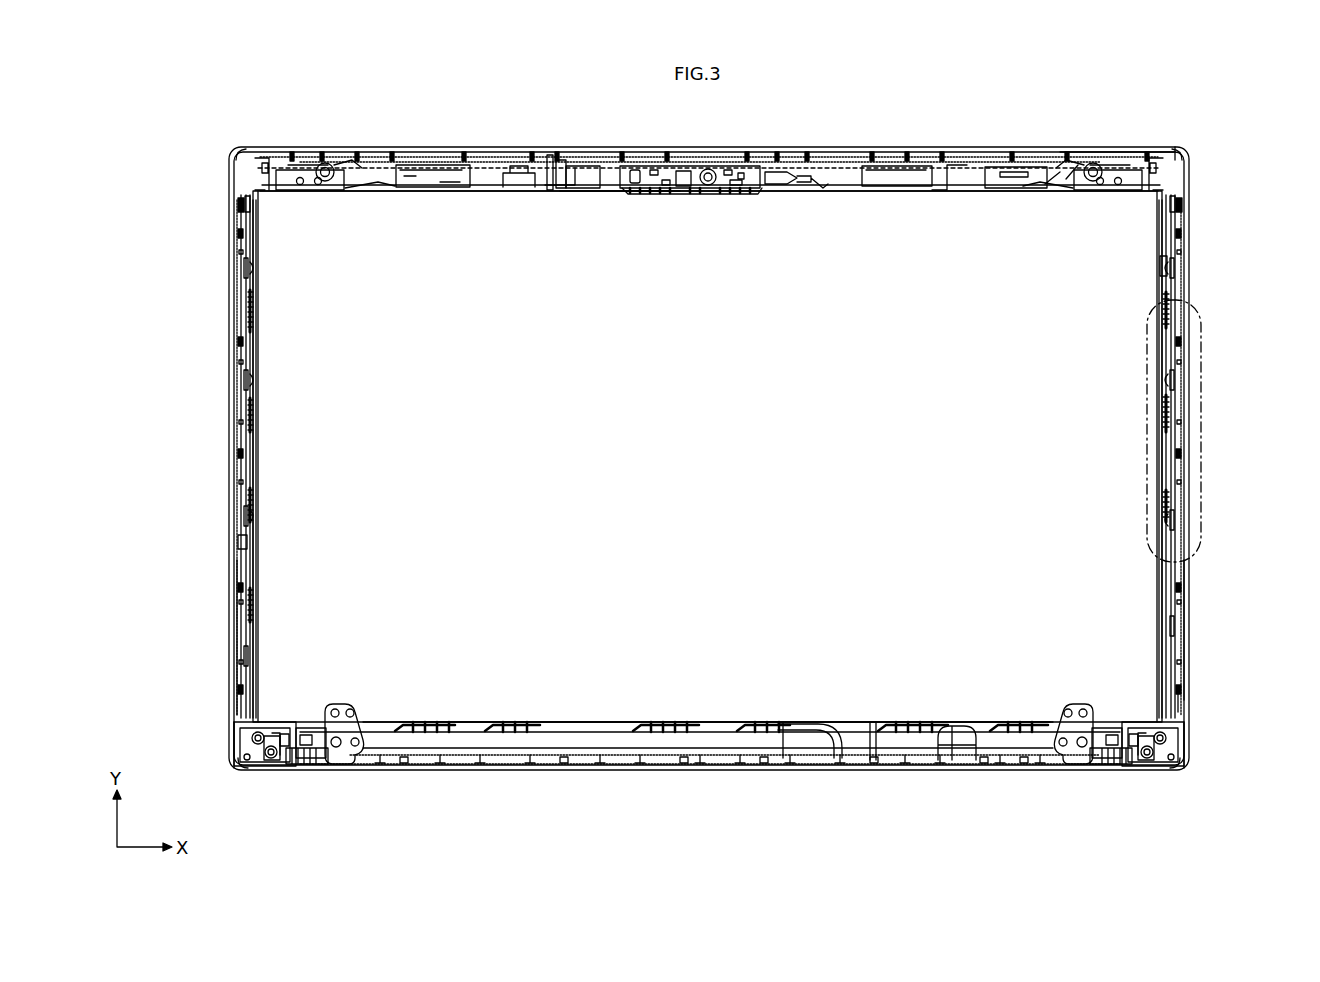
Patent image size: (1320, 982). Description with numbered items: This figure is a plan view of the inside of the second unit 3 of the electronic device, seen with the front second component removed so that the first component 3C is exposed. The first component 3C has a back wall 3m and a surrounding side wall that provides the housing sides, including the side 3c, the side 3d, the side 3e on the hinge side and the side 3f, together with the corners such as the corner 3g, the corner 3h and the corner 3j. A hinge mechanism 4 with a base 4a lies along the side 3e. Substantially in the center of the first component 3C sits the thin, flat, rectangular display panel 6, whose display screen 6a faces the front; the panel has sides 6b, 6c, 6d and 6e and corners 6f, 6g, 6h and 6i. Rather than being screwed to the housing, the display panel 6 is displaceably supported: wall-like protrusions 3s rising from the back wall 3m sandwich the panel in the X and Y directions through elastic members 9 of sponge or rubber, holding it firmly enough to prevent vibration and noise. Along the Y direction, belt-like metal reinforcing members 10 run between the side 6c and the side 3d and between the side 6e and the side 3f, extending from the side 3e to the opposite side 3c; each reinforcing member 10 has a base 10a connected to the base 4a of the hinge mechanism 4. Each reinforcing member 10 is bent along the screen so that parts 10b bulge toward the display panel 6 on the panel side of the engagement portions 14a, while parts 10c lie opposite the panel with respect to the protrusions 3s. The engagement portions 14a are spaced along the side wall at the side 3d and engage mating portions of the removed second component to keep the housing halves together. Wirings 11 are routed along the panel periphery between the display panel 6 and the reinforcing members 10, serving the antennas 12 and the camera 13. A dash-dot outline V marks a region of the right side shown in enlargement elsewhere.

The second unit 3 is at (325, 150).
The side 3c is at (618, 160).
The first component 3C is at (1100, 150).
The side 3d is at (1184, 662).
The side 3e is at (688, 770).
The side 3f is at (236, 712).
The corner 3g is at (238, 149).
The corner 3h is at (1182, 149).
The corner 3j is at (240, 775).
The back wall 3m is at (520, 160).
The protrusion 3s is at (247, 300).
The hinge mechanism 4 is at (300, 764).
The base 4a is at (286, 768).
The display panel 6 is at (405, 210).
The display screen 6a is at (575, 705).
The side 6b is at (565, 193).
The side 6c is at (1178, 703).
The side 6d is at (866, 722).
The side 6e is at (238, 540).
The corner 6f is at (244, 181).
The corner 6g is at (1174, 181).
The corner 6h is at (1185, 748).
The corner 6i is at (236, 748).
The elastic member 9 is at (255, 304).
The reinforcing member 10 is at (792, 160).
The base 10a is at (252, 768).
The part 10b is at (255, 234).
The part 10c is at (243, 268).
The wiring 11 is at (1166, 270).
The antenna 12 is at (437, 164).
The camera 13 is at (716, 168).
The engagement portion 14a is at (240, 234).
The enlarged view region V is at (1205, 553).